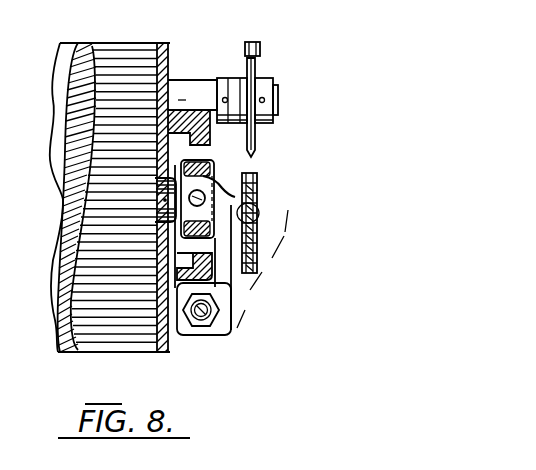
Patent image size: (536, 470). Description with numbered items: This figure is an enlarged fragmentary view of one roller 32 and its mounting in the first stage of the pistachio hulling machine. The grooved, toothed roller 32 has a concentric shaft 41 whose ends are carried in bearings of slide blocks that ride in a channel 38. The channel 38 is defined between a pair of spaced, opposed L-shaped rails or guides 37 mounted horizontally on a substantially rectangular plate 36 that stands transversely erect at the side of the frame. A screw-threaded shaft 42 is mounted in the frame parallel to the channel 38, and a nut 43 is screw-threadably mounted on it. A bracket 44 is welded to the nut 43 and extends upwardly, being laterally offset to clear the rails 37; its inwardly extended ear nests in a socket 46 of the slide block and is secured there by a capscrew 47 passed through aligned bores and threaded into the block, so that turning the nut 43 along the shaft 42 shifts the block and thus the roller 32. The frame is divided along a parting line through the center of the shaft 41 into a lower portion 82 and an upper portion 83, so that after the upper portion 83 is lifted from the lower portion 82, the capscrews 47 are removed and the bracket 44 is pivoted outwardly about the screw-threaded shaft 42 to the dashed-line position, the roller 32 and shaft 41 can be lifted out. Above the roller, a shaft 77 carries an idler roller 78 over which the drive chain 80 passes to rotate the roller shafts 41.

The roller 32 is at (113, 70).
The rectangular plate 36 is at (167, 67).
The L-shaped rail 37 is at (190, 118).
The channel 38 is at (190, 134).
The shaft 41 is at (160, 193).
The screw-threaded shaft 42 is at (205, 317).
The nut 43 is at (215, 313).
The bracket 44 is at (222, 250).
The socket 46 is at (215, 182).
The capscrew 47 is at (205, 199).
The shaft 77 is at (278, 100).
The idler roller 78 is at (257, 63).
The drive chain 80 is at (260, 47).
The lower portion 82 is at (63, 257).
The upper portion 83 is at (66, 177).